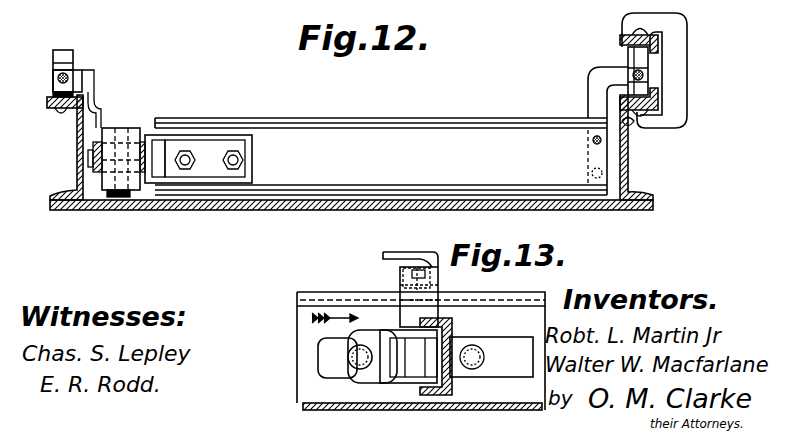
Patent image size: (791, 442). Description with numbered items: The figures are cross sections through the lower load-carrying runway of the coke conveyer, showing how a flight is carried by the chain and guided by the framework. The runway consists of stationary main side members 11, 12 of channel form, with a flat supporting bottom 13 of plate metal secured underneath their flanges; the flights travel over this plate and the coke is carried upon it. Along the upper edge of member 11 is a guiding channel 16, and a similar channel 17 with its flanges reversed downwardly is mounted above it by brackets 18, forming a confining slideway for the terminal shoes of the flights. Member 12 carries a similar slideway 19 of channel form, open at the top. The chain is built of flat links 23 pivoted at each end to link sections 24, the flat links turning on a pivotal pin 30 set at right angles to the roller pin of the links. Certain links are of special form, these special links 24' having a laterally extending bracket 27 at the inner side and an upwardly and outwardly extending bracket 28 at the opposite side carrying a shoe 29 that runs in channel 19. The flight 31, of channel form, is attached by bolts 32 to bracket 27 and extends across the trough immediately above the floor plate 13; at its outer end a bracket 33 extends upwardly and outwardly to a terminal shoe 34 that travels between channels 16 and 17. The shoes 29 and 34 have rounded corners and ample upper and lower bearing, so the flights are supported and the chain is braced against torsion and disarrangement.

In FIG. 12, the main side member 11 is at (629, 160).
In FIG. 12, the main side member 12 is at (78, 180).
In FIG. 13, the main side member 12 is at (307, 340).
In FIG. 12, the flat supporting bottom 13 is at (181, 212).
In FIG. 13, the flat supporting bottom 13 is at (494, 407).
In FIG. 12, the guiding channel 16 is at (656, 98).
In FIG. 12, the guiding channel 17 is at (660, 40).
In FIG. 12, the bracket 18 is at (673, 62).
In FIG. 12, the slideway 19 is at (47, 101).
In FIG. 13, the slideway 19 is at (318, 298).
In FIG. 12, the flat link 23 is at (140, 196).
In FIG. 13, the flat link 23 is at (327, 360).
In FIG. 13, the link section 24 is at (444, 345).
In FIG. 12, the special link 24' is at (125, 139).
In FIG. 13, the special link 24' is at (372, 382).
In FIG. 12, the laterally extending bracket 27 is at (205, 142).
In FIG. 12, the upwardly and outwardly extending bracket 28 is at (93, 82).
In FIG. 12, the shoe 29 is at (62, 50).
In FIG. 13, the shoe 29 is at (403, 258).
In FIG. 13, the pivotal pin 30 is at (350, 362).
In FIG. 12, the flight 31 is at (417, 130).
In FIG. 13, the flight 31 is at (445, 396).
In FIG. 12, the bolts 32 is at (192, 167).
In FIG. 12, the bracket 33 is at (596, 82).
In FIG. 12, the terminal shoe 34 is at (628, 53).